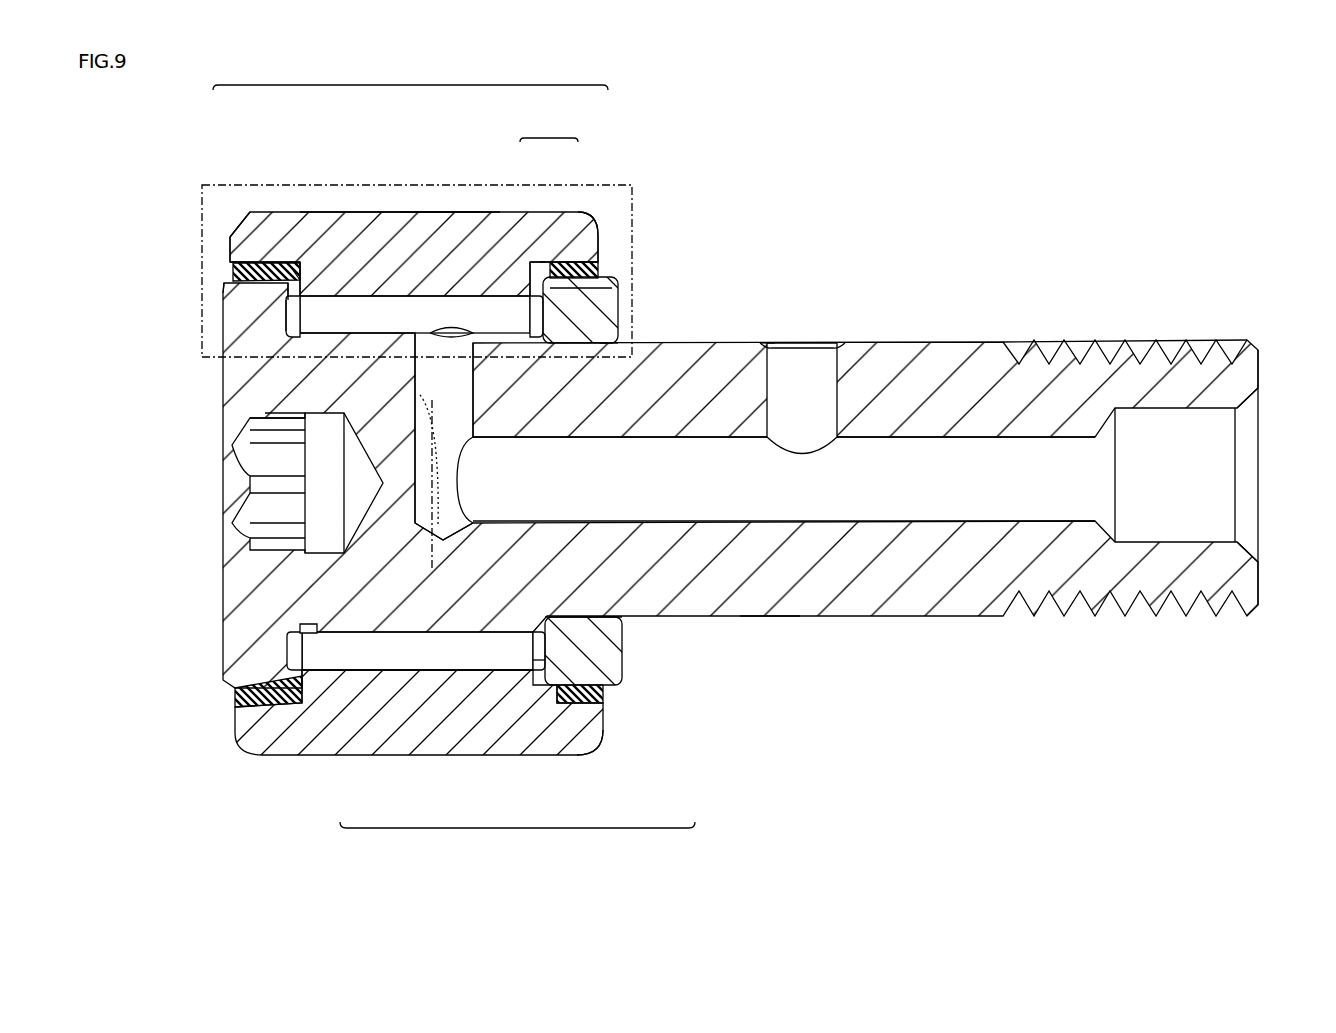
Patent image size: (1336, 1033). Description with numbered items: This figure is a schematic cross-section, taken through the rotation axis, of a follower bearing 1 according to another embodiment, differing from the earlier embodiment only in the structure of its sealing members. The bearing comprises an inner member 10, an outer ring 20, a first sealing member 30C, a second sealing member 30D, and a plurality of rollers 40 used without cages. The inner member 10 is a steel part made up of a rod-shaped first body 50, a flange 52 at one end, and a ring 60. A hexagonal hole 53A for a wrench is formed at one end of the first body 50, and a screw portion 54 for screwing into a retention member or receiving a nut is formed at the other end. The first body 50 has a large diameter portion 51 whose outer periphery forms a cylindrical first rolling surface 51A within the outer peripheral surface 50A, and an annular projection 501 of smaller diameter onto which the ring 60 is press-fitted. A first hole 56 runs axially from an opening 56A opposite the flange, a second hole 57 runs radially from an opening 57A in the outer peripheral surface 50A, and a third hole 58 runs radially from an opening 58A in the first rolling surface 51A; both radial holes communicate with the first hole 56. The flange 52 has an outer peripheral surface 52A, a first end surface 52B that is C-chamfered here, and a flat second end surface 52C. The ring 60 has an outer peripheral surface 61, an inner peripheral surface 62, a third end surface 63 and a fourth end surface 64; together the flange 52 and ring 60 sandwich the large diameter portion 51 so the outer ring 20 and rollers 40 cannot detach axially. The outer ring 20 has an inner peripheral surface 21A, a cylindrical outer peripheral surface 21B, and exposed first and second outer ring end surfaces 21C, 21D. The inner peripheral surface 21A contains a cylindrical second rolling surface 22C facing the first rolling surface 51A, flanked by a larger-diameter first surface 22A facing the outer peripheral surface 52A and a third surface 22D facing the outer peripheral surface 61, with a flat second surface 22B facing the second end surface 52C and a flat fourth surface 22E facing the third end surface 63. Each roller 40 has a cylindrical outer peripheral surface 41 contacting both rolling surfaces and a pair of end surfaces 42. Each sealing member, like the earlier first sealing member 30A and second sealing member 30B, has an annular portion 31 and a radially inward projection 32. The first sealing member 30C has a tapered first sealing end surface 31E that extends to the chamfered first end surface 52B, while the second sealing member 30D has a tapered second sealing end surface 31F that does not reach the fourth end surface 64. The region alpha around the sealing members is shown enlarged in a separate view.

The follower bearing 1 is at (1196, 228).
The inner member 10 is at (517, 839).
The outer ring 20 is at (446, 256).
The inner peripheral surface 21A is at (410, 75).
The outer peripheral surface 21B is at (385, 262).
The first outer ring end surface 21C is at (234, 243).
The second outer ring end surface 21D is at (600, 236).
The first surface 22A is at (272, 250).
The second surface 22B is at (300, 280).
The second rolling surface 22C is at (448, 245).
The third surface 22D is at (586, 235).
The fourth surface 22E is at (555, 262).
The first sealing member 30A is at (270, 690).
The second sealing member 30B is at (582, 700).
The first sealing member 30C is at (262, 262).
The second sealing member 30D is at (549, 126).
The annular portion 31 is at (575, 262).
The first sealing end surface 31E is at (240, 264).
The second sealing end surface 31F is at (600, 264).
The projection 32 is at (545, 262).
The rollers 40 is at (312, 320).
The outer peripheral surface 41 is at (392, 700).
The end surfaces 42 is at (292, 628).
The first body 50 is at (718, 592).
The outer peripheral surface 50A is at (780, 617).
The annular projection 501 is at (603, 634).
The large diameter portion 51 is at (318, 300).
The first rolling surface 51A is at (424, 328).
The flange 52 is at (252, 323).
The outer peripheral surface 52A is at (248, 268).
The first end surface 52B is at (223, 290).
The second end surface 52C is at (286, 290).
The hexagonal hole 53A is at (255, 546).
The screw portion 54 is at (1110, 346).
The first hole 56 is at (886, 518).
The opening 56A is at (1246, 402).
The second hole 57 is at (803, 346).
The opening 57A is at (768, 346).
The third hole 58 is at (432, 668).
The opening 58A is at (266, 408).
The ring 60 is at (592, 314).
The outer peripheral surface 61 is at (585, 270).
The inner peripheral surface 62 is at (602, 346).
The third end surface 63 is at (520, 258).
The fourth end surface 64 is at (602, 292).
The region alpha is at (610, 186).